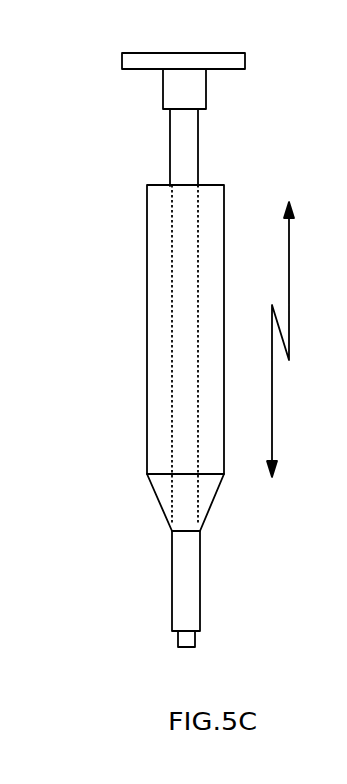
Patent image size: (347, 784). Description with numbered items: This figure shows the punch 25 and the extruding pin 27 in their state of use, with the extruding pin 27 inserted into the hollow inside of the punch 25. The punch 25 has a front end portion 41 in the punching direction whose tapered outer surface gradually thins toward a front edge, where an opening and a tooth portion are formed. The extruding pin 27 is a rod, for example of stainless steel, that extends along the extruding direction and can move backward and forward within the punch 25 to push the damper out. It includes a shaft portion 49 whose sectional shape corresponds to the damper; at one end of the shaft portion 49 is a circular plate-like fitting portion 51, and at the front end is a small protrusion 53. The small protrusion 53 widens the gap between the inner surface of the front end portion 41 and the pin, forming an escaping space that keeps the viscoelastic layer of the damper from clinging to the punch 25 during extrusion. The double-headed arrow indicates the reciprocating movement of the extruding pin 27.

The fitting portion 51 is at (148, 53).
The extruding pin 27 is at (188, 148).
The punch 25 is at (158, 227).
The front end portion 41 is at (210, 493).
The shaft portion 49 is at (185, 582).
The small protrusion 53 is at (193, 634).